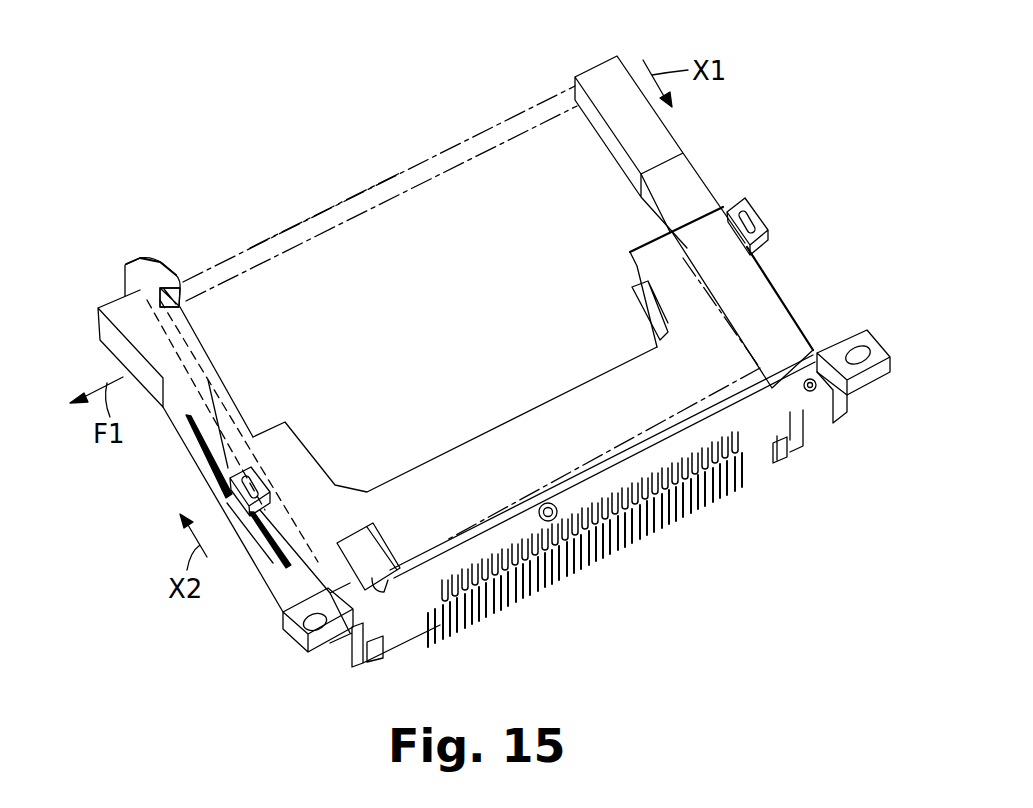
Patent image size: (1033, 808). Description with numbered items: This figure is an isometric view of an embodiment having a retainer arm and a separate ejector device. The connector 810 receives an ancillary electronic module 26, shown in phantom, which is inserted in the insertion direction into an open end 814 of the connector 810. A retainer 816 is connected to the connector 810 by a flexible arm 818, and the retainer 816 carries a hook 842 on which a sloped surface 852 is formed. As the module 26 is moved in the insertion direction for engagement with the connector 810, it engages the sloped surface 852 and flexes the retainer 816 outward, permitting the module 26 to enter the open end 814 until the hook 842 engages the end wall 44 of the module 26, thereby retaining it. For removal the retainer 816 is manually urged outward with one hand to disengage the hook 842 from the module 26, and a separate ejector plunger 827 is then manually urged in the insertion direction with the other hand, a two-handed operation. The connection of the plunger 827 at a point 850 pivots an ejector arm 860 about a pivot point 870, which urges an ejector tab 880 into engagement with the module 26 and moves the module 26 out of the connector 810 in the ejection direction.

The ancillary electronic module 26 is at (389, 178).
The end wall 44 is at (303, 224).
The connector 810 is at (797, 305).
The open end 814 is at (477, 437).
The retainer 816 is at (128, 264).
The flexible arm 818 is at (177, 410).
The ejector plunger 827 is at (595, 68).
The hook 842 is at (176, 297).
The point 850 is at (817, 392).
The sloped surface 852 is at (155, 262).
The ejector arm 860 is at (748, 417).
The pivot point 870 is at (550, 502).
The ejector tab 880 is at (374, 580).